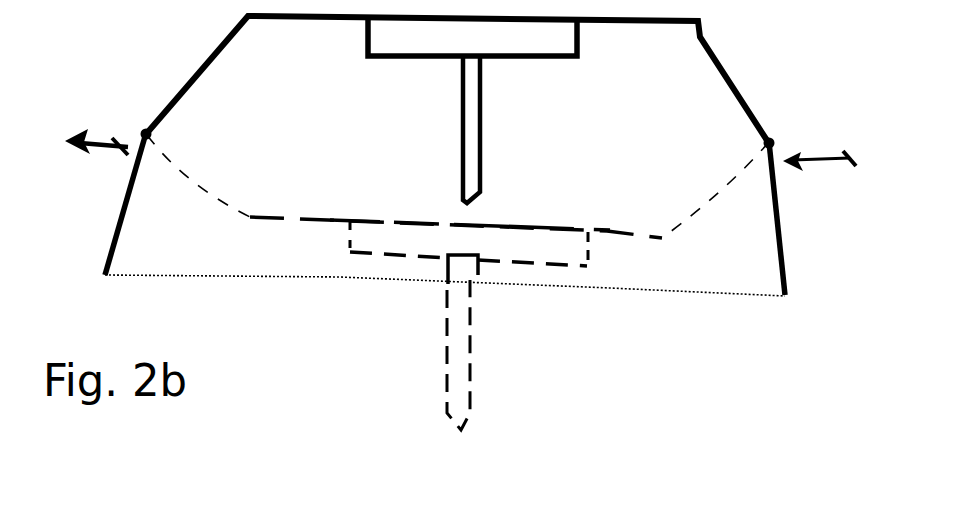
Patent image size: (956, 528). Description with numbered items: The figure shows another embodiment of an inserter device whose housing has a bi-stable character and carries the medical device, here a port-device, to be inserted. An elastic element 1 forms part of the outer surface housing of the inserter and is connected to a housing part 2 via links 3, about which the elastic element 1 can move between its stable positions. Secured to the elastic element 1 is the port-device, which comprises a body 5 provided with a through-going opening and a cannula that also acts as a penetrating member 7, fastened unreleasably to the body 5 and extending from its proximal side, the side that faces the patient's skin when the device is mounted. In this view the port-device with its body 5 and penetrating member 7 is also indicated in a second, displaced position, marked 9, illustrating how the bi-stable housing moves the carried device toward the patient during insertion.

The elastic element 1 is at (210, 62).
The housing part 2 is at (118, 222).
The links 3 is at (163, 153).
The body 5 is at (552, 37).
The penetrating member 7 is at (482, 165).
The moved position of receptacle 9 is at (550, 288).